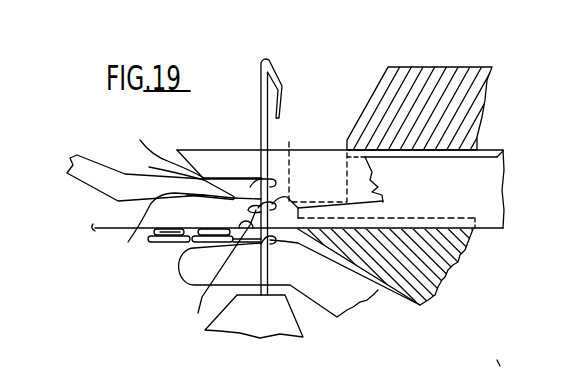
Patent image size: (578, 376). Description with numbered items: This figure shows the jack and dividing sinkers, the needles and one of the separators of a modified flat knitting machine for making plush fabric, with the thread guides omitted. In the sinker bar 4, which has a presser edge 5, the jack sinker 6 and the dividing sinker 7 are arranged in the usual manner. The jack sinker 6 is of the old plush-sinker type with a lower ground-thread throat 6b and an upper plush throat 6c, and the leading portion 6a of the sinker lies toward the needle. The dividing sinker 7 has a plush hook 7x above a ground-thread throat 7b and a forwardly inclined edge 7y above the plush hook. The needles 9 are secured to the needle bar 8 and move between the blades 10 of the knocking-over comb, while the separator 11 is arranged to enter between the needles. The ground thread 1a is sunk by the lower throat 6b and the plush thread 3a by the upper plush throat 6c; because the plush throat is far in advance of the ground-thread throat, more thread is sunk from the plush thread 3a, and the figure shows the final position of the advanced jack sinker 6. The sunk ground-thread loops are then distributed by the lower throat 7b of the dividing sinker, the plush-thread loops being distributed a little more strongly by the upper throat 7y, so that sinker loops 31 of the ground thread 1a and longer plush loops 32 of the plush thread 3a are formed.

The ground thread 1a is at (222, 270).
The plush thread 3a is at (207, 180).
The sinker bar 4 is at (452, 73).
The presser edge 5 is at (318, 163).
The jack sinker 6 is at (303, 150).
The yarn portion 6a is at (165, 168).
The ground-thread throat 6b is at (155, 225).
The plush throat 6c is at (167, 151).
The dividing sinker 7 is at (452, 158).
The ground-thread throat 7b is at (386, 199).
The plush hook 7x is at (385, 194).
The forwardly inclined edge 7y is at (380, 174).
The needle bar 8 is at (270, 328).
The needle 9 is at (260, 105).
The blade of the knocking-over comb 10 is at (192, 277).
The separator 11 is at (93, 183).
The sinker loop 31 is at (170, 245).
The plush loop 32 is at (148, 244).